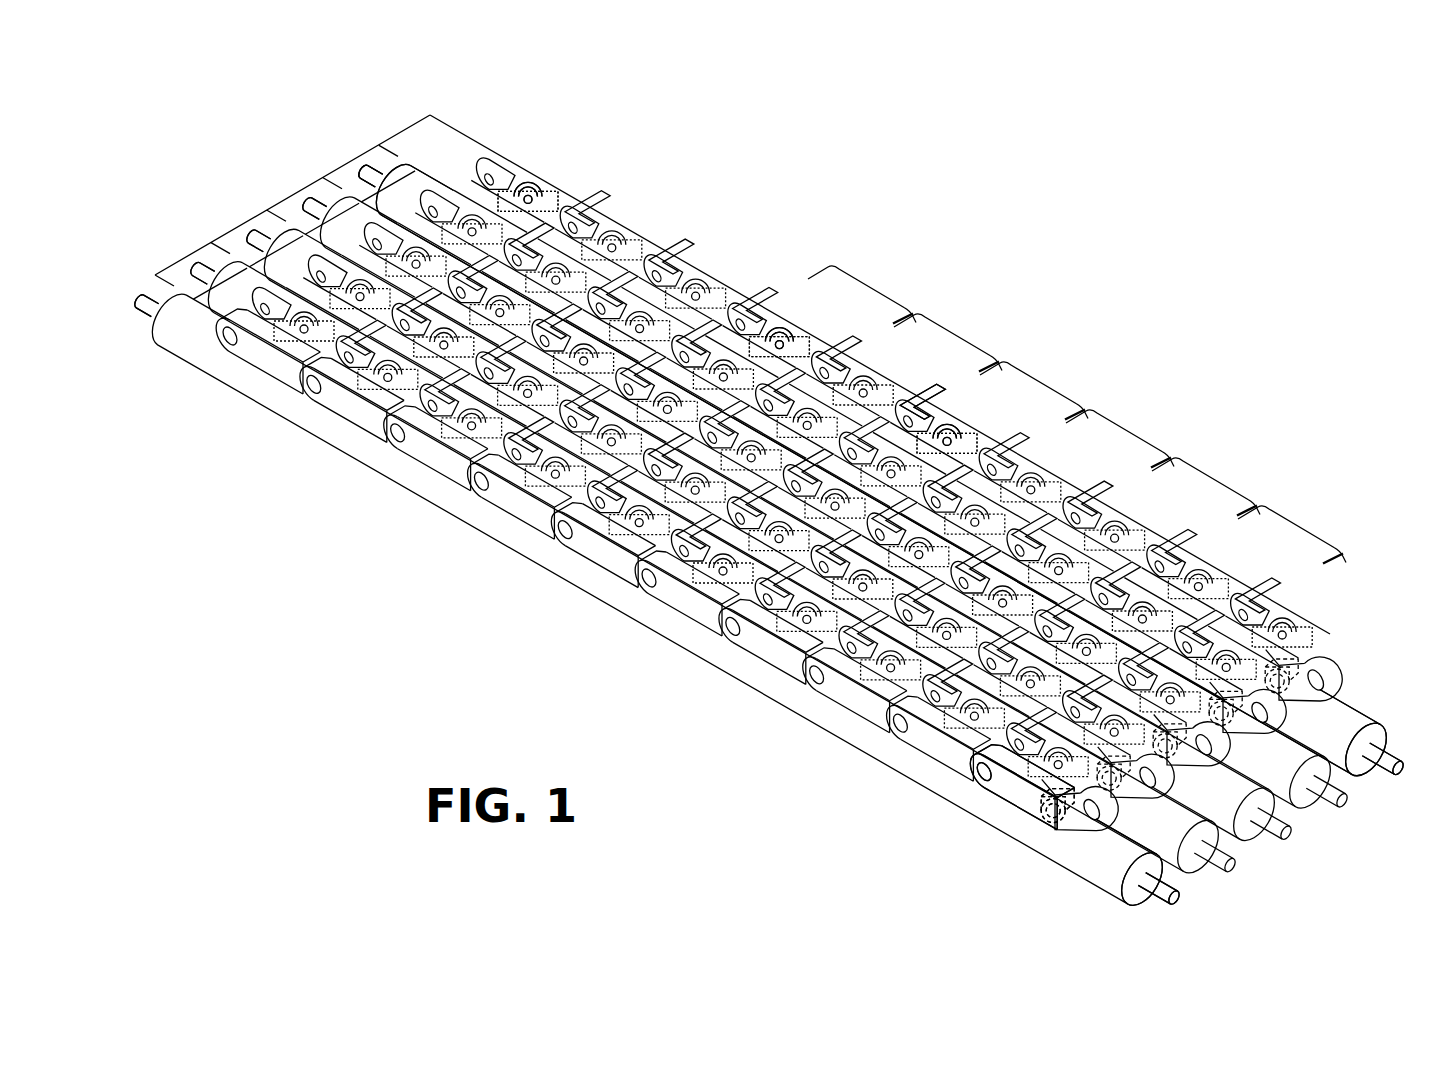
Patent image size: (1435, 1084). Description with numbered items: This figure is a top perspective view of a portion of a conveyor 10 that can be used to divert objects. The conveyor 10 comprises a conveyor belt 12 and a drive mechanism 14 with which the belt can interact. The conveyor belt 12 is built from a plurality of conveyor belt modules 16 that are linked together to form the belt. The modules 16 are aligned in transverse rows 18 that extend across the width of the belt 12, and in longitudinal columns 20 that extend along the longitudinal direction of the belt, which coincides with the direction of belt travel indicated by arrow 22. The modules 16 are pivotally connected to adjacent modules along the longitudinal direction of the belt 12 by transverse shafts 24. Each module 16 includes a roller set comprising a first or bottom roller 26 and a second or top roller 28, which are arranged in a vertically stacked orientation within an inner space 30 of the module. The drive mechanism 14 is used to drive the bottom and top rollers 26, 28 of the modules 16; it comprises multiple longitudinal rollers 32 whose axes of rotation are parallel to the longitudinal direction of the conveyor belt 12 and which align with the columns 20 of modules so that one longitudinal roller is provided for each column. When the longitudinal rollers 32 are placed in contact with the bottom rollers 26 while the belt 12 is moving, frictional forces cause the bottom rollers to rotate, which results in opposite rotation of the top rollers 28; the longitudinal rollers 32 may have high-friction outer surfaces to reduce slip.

The conveyor 10 is at (1153, 150).
The conveyor belt 12 is at (558, 150).
The drive mechanism 14 is at (1248, 872).
The conveyor belt module 16 is at (598, 212).
The transverse row 18 is at (1077, 411).
The longitudinal column 20 is at (410, 132).
The arrow 22 is at (808, 767).
The transverse shaft 24 is at (985, 780).
The bottom roller 26 is at (1053, 822).
The top roller 28 is at (779, 328).
The inner space 30 is at (633, 240).
The longitudinal roller 32 is at (425, 188).